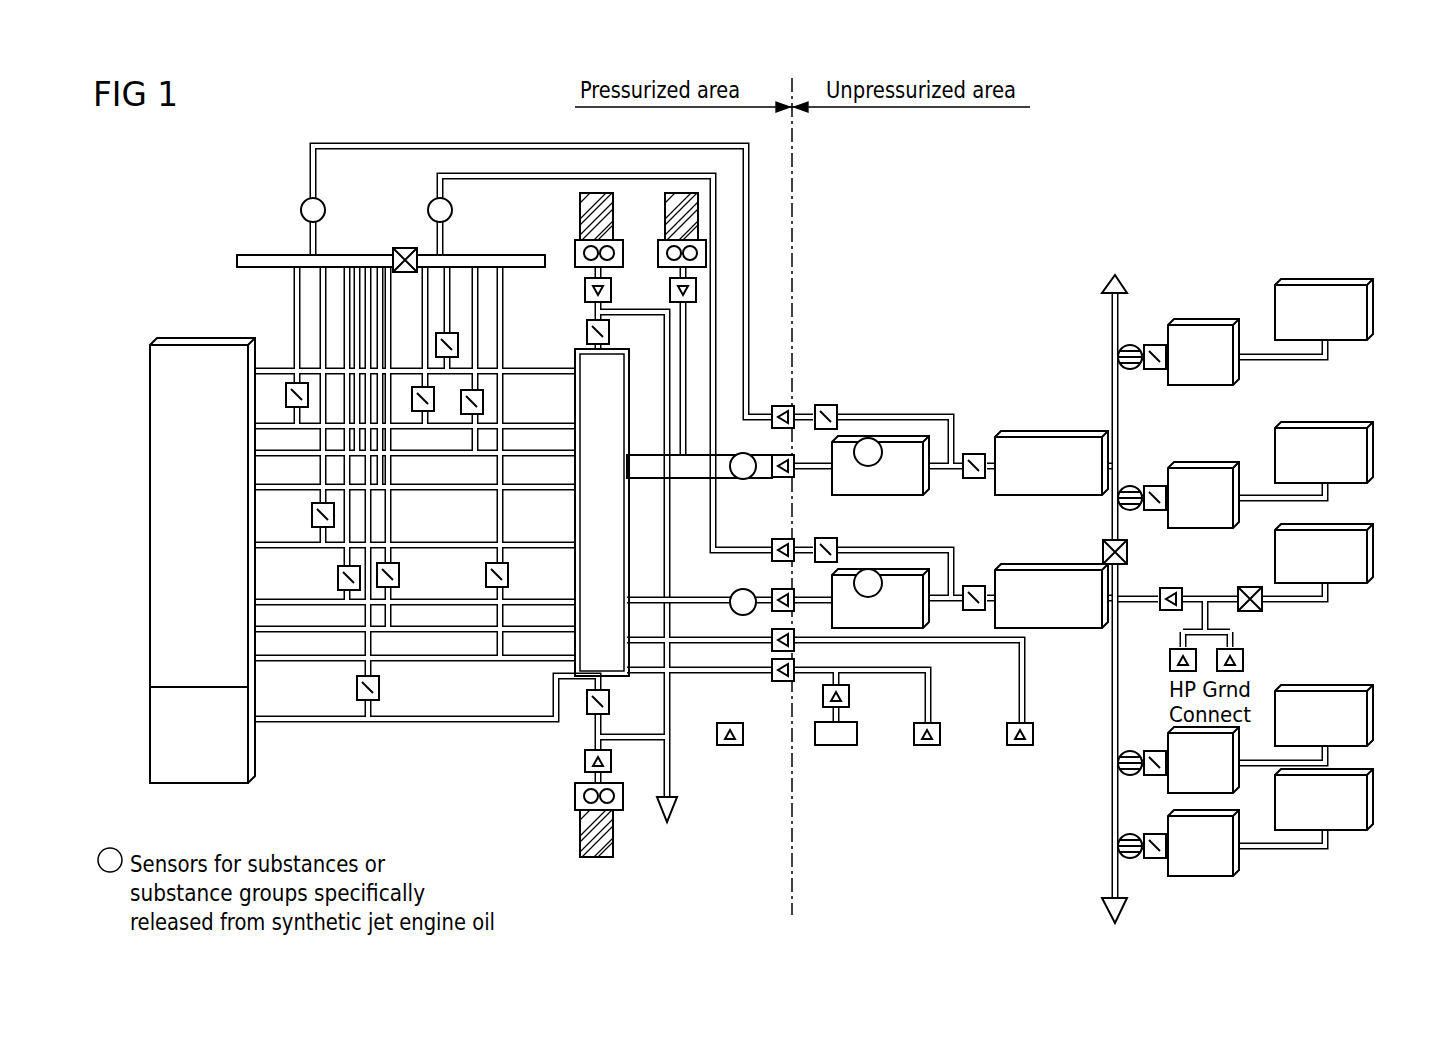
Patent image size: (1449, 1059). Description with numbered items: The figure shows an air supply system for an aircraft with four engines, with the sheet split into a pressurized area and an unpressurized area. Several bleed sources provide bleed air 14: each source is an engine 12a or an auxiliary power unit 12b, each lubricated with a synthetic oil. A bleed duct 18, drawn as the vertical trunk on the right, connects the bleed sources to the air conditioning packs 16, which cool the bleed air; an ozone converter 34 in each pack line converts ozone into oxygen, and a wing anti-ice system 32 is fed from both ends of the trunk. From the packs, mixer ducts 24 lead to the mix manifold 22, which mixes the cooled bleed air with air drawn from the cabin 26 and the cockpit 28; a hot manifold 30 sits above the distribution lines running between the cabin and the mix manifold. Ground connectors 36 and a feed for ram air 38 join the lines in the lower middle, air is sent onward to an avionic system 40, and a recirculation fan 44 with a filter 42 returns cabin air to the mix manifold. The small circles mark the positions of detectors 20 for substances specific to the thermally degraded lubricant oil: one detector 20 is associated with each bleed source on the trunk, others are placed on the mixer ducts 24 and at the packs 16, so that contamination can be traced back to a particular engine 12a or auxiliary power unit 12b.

The engine 12a is at (1357, 554).
The auxiliary power unit 12b is at (1373, 554).
The bleed air 14 is at (1183, 599).
The air conditioning pack 16 is at (887, 503).
The bleed duct 18 is at (1106, 656).
The detector 20 is at (731, 559).
The mix manifold 22 is at (575, 355).
The mixer duct 24 is at (700, 600).
The cabin 26 is at (150, 492).
The cockpit 28 is at (150, 712).
The hot manifold 30 is at (264, 255).
The wing anti-ice system 32 is at (1049, 260).
The ozone converter 34 is at (1051, 503).
The ground connector 36 is at (878, 801).
The ram air 38 is at (826, 820).
The avionic system 40 is at (666, 900).
The filter 42 is at (580, 836).
The recirculation fan 44 is at (576, 792).